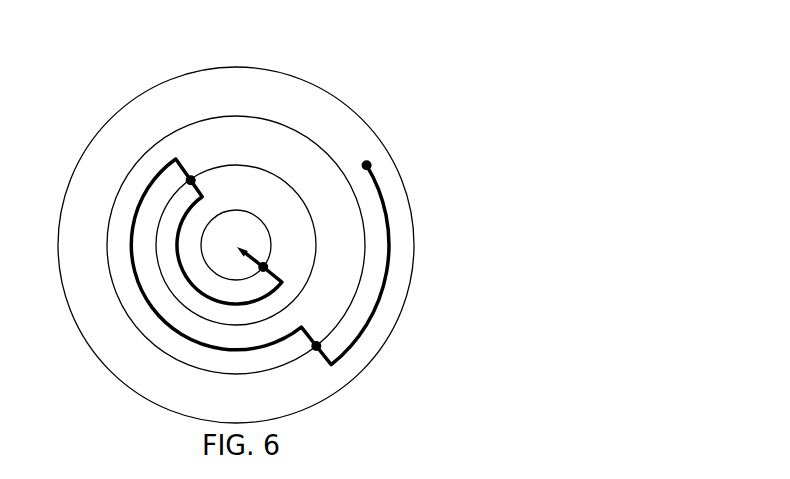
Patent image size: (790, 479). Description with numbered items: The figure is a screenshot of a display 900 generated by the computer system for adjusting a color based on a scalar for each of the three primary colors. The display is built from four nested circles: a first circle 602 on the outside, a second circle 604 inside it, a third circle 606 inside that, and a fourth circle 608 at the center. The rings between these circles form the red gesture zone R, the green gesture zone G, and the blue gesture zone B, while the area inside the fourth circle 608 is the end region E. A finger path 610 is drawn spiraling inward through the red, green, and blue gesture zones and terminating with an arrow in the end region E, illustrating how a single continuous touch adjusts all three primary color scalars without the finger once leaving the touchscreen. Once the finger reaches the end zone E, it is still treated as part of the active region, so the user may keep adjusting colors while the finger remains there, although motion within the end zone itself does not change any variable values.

The first circle 602 is at (237, 66).
The second circle 604 is at (265, 117).
The third circle 606 is at (270, 170).
The fourth circle 608 is at (253, 215).
The finger path 610 is at (388, 222).
The display 900 is at (446, 136).